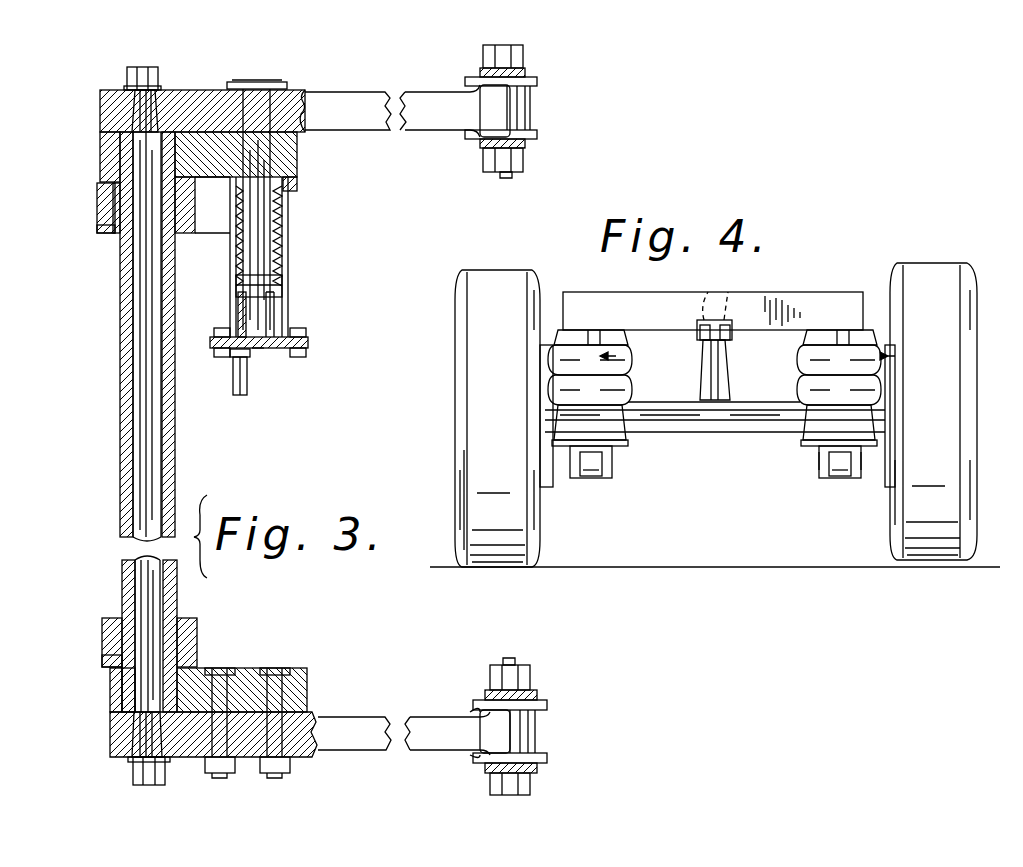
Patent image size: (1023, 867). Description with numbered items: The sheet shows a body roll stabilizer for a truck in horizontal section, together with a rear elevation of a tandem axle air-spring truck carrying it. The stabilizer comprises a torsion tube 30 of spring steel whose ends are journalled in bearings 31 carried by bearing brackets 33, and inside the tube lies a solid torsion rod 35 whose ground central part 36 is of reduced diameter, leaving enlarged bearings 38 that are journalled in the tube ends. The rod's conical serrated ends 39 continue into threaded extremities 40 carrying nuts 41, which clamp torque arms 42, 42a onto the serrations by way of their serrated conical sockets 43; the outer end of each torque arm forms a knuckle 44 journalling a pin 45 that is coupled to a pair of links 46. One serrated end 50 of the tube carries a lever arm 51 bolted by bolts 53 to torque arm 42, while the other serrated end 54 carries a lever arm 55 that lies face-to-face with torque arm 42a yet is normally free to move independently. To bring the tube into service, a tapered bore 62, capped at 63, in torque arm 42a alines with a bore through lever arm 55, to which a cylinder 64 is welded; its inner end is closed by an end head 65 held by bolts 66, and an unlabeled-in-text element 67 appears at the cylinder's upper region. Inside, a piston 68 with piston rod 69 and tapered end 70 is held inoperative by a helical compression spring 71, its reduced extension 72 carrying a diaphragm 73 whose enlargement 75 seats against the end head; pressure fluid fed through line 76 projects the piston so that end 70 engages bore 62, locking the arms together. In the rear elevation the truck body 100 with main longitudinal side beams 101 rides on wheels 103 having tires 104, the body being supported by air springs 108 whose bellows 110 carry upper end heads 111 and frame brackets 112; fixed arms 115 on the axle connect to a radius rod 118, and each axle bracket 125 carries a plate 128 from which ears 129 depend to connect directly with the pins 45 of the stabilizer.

In FIG. 3, the torsion tube 30 is at (140, 568).
In FIG. 3, the bearings 31 is at (104, 209).
In FIG. 3, the bearing bracket 33 is at (102, 234).
In FIG. 3, the torsion rod 35 is at (130, 373).
In FIG. 3, the central part of torsion rod 36 is at (140, 435).
In FIG. 3, the enlarged bearings 38 is at (113, 183).
In FIG. 3, the serrated ends 39 is at (130, 100).
In FIG. 3, the threaded extremities 40 is at (146, 67).
In FIG. 3, the nuts 41 is at (158, 82).
In FIG. 3, the torque arm 42 is at (388, 748).
In FIG. 3, the torque arm 42a is at (399, 92).
In FIG. 3, the serrated conical sockets 43 is at (100, 112).
In FIG. 3, the knuckle 44 is at (537, 112).
In FIG. 3, the pin 45 is at (506, 178).
In FIG. 3, the links 46 is at (526, 73).
In FIG. 3, the serrated end of torsion tube 50 is at (110, 699).
In FIG. 3, the lever arm 51 is at (307, 680).
In FIG. 3, the bolts 53 is at (274, 668).
In FIG. 3, the serrated end of torsion tube 54 is at (100, 150).
In FIG. 3, the lever arm 55 is at (297, 150).
In FIG. 3, the tapered bore 62 is at (305, 100).
In FIG. 3, the cap 63 is at (258, 82).
In FIG. 3, the cylinder 64 is at (288, 210).
In FIG. 3, the end head 65 is at (296, 356).
In FIG. 3, the bolts 66 is at (300, 340).
In FIG. 3, the collar 67 is at (297, 184).
In FIG. 3, the piston 68 is at (283, 278).
In FIG. 3, the piston rod 69 is at (258, 240).
In FIG. 3, the tapered end 70 is at (248, 180).
In FIG. 3, the helical compression spring 71 is at (221, 206).
In FIG. 3, the reduced extension 72 is at (240, 310).
In FIG. 3, the diaphragm 73 is at (280, 305).
In FIG. 3, the enlargement 75 is at (258, 350).
In FIG. 3, the line 76 is at (240, 394).
In FIG. 4, the truck body 100 is at (672, 292).
In FIG. 4, the main longitudinal side beams 101 is at (812, 296).
In FIG. 4, the wheels 103 is at (548, 486).
In FIG. 4, the tire 104 is at (484, 270).
In FIG. 4, the air springs 108 is at (606, 356).
In FIG. 4, the bellows 110 is at (615, 374).
In FIG. 4, the upper end head 111 is at (594, 342).
In FIG. 4, the frame bracket 112 is at (574, 336).
In FIG. 4, the fixed arms 115 is at (718, 353).
In FIG. 4, the radius rod 118 is at (716, 308).
In FIG. 4, the axle bracket 125 is at (612, 416).
In FIG. 4, the plate 128 is at (610, 440).
In FIG. 4, the ears 129 is at (819, 452).